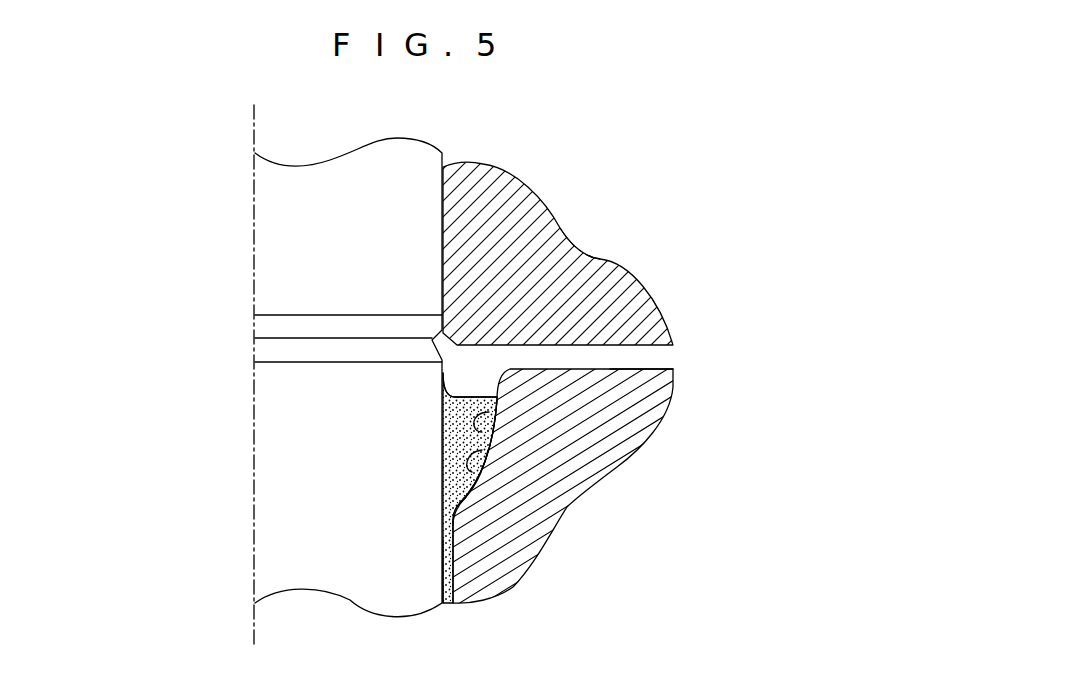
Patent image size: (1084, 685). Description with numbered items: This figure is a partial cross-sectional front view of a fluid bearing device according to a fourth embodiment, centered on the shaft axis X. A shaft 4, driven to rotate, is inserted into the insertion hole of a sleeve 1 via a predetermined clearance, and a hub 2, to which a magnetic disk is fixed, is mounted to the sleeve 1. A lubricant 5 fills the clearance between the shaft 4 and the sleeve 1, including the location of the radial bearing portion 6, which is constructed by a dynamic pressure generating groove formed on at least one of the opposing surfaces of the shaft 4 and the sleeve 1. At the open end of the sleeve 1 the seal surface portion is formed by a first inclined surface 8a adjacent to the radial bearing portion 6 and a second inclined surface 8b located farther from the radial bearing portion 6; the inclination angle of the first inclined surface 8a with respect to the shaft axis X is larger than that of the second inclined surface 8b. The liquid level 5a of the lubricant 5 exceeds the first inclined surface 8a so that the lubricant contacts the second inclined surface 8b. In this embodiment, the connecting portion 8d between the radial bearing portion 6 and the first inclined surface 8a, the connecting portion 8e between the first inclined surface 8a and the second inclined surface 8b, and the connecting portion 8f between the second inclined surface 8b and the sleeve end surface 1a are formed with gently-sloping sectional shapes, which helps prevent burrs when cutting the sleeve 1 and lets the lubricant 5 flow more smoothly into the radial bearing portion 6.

The sleeve 1 is at (623, 400).
The sleeve end surface 1a is at (628, 367).
The hub 2 is at (500, 213).
The shaft 4 is at (357, 200).
The lubricant 5 is at (450, 440).
The liquid level 5a is at (443, 375).
The radial bearing portion 6 is at (440, 560).
The first inclined surface 8a is at (448, 480).
The second inclined surface 8b is at (487, 443).
The connecting portion 8d is at (452, 503).
The connecting portion 8e is at (487, 458).
The connecting portion 8f is at (573, 278).
The shaft axis X is at (250, 232).